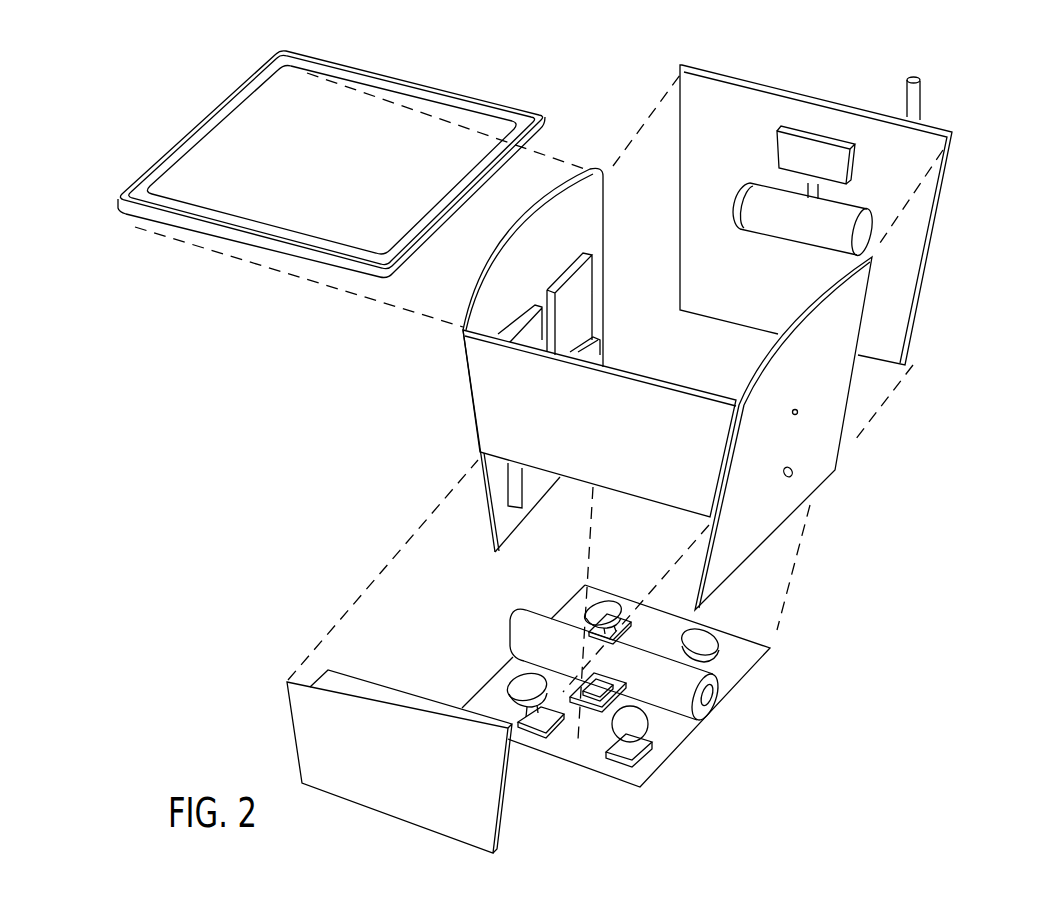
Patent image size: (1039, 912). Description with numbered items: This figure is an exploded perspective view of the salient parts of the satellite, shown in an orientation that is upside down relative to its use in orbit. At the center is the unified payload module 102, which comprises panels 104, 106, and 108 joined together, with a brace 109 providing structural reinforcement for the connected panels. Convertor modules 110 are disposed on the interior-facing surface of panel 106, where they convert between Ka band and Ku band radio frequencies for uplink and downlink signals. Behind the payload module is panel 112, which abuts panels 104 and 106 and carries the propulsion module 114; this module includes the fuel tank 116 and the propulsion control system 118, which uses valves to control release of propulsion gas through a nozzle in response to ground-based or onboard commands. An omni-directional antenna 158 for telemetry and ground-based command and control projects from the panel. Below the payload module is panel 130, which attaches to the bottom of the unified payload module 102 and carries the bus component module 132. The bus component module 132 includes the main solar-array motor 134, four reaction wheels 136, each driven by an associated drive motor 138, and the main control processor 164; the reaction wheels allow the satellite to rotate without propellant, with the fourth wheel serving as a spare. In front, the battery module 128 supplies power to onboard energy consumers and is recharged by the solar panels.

The unified payload module 102 is at (870, 460).
The panel 104 is at (841, 362).
The panel 106 is at (550, 261).
The panel 108 is at (615, 436).
The brace 109 is at (239, 285).
The convertor modules 110 is at (580, 303).
The panel 112 is at (746, 146).
The propulsion module 114 is at (882, 187).
The fuel tank 116 is at (811, 229).
The propulsion control system 118 is at (830, 171).
The battery module 128 is at (357, 693).
The panel 130 is at (742, 652).
The bus component module 132 is at (760, 689).
The main solar-array motor 134 is at (683, 700).
The reaction wheels 136 is at (637, 723).
The drive motor 138 is at (617, 753).
The omni-directional antenna 158 is at (921, 83).
The main control processor 164 is at (590, 700).